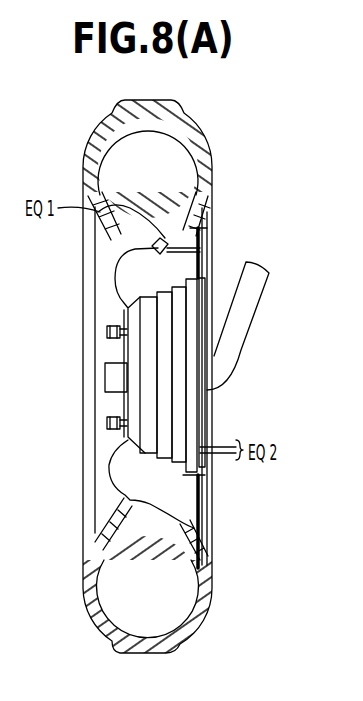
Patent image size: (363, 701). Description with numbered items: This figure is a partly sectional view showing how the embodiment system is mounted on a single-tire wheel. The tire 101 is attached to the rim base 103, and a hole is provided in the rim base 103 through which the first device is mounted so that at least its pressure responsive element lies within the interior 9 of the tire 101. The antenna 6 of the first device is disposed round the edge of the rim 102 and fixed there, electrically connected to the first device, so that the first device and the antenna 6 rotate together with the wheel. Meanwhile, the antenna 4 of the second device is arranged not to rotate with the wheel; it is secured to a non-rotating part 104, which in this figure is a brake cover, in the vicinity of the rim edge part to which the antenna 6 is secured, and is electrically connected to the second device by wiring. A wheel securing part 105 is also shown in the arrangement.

The tire 101 is at (192, 122).
The interior of the tire 9 is at (186, 162).
The antenna 6 is at (200, 258).
The rim 102 is at (112, 278).
The rim base 103 is at (110, 247).
The antenna 4 is at (205, 430).
The non-rotating part 104 is at (203, 404).
The wheel securing part 105 is at (122, 398).